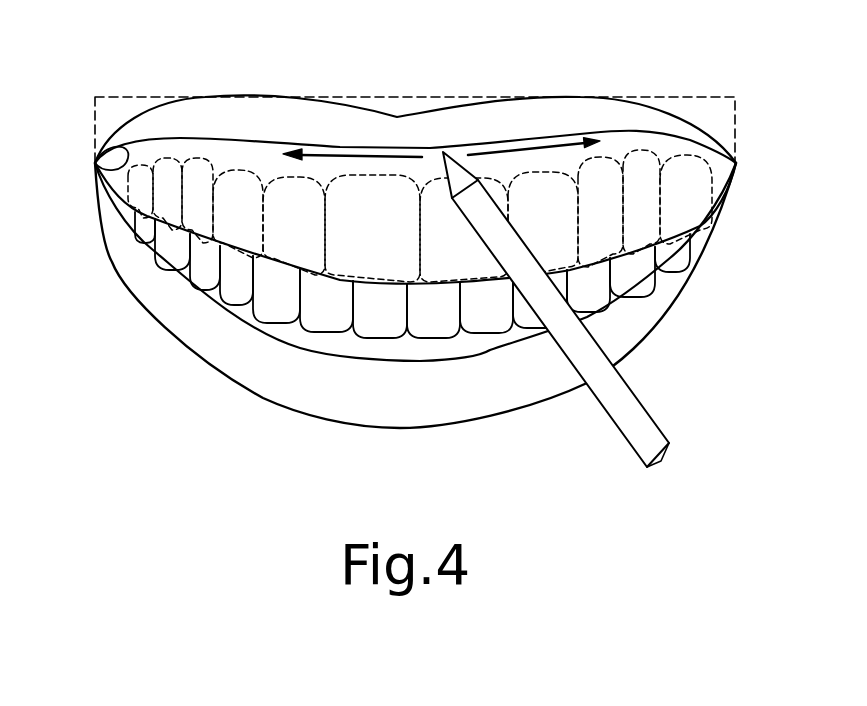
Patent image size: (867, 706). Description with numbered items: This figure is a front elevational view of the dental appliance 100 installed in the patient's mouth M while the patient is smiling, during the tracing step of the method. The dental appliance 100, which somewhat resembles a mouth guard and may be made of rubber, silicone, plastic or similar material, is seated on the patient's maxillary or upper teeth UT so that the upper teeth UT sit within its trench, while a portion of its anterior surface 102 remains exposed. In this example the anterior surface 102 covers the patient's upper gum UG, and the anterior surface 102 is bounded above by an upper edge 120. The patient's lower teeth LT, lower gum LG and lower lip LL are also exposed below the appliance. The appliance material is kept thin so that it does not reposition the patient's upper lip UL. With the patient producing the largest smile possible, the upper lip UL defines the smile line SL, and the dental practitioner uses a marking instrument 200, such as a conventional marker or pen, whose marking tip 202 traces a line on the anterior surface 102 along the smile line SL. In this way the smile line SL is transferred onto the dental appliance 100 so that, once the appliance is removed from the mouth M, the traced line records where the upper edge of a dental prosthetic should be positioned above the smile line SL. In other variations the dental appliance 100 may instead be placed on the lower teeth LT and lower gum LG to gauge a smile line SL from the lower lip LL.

The upper lip UL is at (225, 117).
The lower lip LL is at (315, 393).
The smile line SL is at (95, 163).
The upper gum UG is at (108, 215).
The upper teeth UT is at (285, 238).
The lower teeth LT is at (318, 320).
The lower gum LG is at (460, 342).
The dental appliance 100 is at (668, 159).
The anterior surface 102 is at (207, 150).
The upper edge 120 is at (642, 97).
The marking instrument 200 is at (625, 406).
The marking tip 202 is at (444, 150).
The mouth M is at (770, 153).